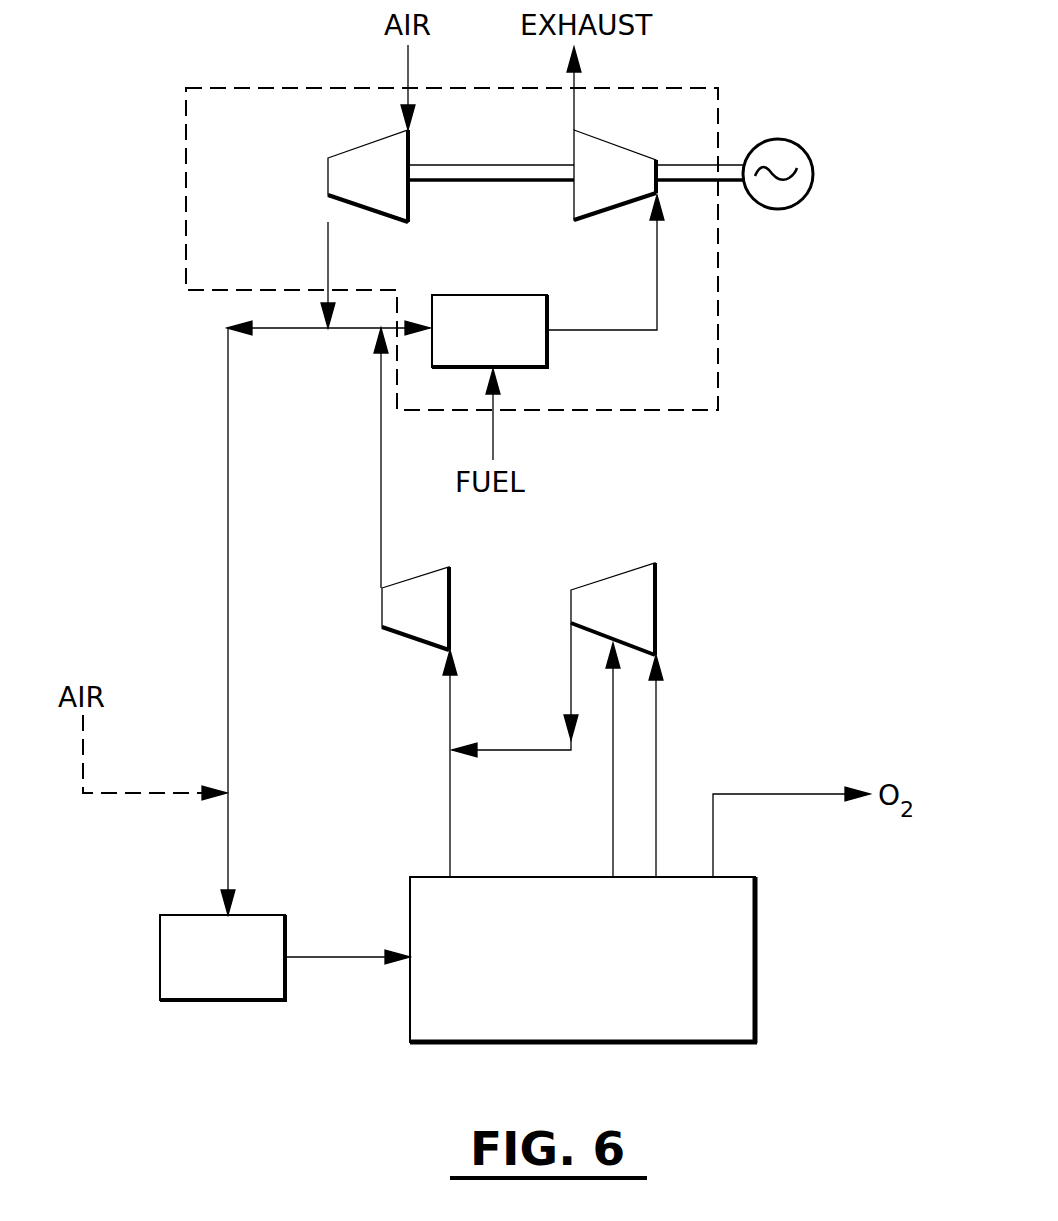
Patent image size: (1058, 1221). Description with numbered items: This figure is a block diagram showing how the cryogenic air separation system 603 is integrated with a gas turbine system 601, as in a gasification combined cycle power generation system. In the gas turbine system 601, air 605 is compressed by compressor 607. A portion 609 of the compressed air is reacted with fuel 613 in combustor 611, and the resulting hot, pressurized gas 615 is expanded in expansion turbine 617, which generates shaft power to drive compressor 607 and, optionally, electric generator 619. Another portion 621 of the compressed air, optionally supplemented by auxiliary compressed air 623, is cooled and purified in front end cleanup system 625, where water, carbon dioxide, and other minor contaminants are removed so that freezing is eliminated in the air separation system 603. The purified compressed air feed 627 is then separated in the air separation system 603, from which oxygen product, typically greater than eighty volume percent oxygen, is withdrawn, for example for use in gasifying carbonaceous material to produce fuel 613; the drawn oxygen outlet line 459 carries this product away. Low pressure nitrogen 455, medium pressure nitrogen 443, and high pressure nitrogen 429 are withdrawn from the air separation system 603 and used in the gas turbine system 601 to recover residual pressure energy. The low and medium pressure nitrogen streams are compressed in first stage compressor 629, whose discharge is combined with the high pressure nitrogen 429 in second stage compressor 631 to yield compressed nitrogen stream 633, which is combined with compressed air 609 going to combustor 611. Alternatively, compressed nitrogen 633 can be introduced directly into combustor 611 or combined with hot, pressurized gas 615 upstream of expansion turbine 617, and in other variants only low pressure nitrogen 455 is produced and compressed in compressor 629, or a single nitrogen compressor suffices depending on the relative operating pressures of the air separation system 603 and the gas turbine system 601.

The gas turbine system 601 is at (718, 325).
The cryogenic air separation system 603 is at (612, 967).
The air 605 is at (406, 98).
The compressor 607 is at (327, 160).
The portion of compressed air 609 is at (364, 324).
The combustor 611 is at (516, 347).
The fuel 613 is at (543, 414).
The hot, pressurized gas 615 is at (628, 331).
The expansion turbine 617 is at (619, 146).
The electric generator 619 is at (778, 140).
The portion of compressed air 621 is at (226, 390).
The auxiliary compressed air 623 is at (130, 794).
The front end cleanup system 625 is at (253, 969).
The purified compressed air feed 627 is at (344, 960).
The first stage compressor 629 is at (658, 592).
The second stage compressor 631 is at (450, 597).
The compressed nitrogen stream 633 is at (380, 445).
The high pressure nitrogen 429 is at (450, 806).
The medium pressure nitrogen 443 is at (613, 812).
The low pressure nitrogen 455 is at (656, 727).
The oxygen outlet line 459 is at (810, 796).